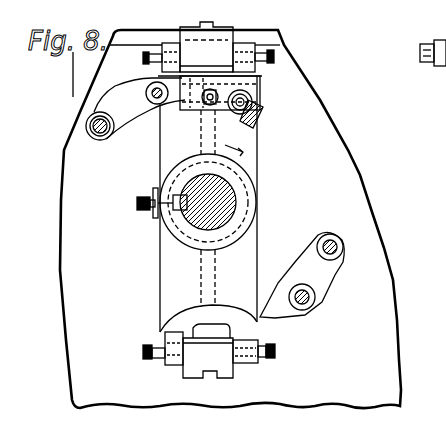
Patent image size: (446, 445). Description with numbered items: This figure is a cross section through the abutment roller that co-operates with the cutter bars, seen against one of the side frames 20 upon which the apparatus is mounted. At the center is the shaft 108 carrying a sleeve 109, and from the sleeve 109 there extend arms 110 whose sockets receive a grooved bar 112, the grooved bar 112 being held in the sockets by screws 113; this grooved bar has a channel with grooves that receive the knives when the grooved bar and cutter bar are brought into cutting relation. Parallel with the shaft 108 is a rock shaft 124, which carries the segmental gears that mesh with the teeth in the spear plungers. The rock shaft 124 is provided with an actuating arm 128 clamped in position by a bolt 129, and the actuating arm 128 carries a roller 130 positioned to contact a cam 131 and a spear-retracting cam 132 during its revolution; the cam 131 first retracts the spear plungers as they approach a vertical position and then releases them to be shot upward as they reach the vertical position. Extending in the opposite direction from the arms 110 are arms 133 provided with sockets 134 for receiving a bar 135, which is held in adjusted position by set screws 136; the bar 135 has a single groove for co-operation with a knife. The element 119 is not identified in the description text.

The side frame 20 is at (343, 162).
The grooved bar 112 is at (192, 34).
The screws 113 is at (143, 57).
The cam 131 is at (128, 110).
The roller 130 is at (207, 104).
The actuating arm 128 is at (249, 93).
The rock shaft 124 is at (250, 98).
The bolt 129 is at (251, 101).
The arms 110 is at (253, 133).
The arms 133 is at (160, 268).
The sleeve 109 is at (243, 181).
The shaft 108 is at (232, 200).
The bar 135 is at (197, 372).
The sockets 134 is at (165, 333).
The set screws 136 is at (143, 352).
The spear-retracting cam 132 is at (305, 259).
The terminal 119 is at (445, 86).